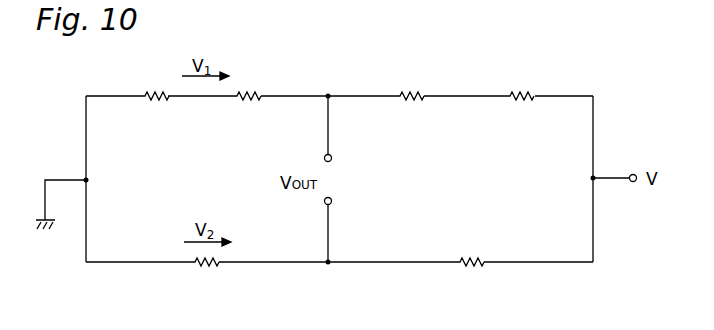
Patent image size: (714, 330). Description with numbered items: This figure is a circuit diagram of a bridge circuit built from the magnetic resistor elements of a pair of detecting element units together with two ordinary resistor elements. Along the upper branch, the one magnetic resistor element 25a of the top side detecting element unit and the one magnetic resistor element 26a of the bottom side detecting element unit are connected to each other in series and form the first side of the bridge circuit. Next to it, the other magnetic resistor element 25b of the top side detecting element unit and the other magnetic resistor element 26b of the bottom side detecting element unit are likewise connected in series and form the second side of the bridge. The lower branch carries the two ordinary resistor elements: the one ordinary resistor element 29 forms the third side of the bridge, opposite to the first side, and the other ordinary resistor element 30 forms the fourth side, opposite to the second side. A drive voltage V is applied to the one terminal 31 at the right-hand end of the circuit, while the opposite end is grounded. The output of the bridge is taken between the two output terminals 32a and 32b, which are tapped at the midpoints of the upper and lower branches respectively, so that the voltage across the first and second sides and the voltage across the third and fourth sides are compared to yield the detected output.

The magnetic resistor element 26a is at (160, 102).
The magnetic resistor element 25a is at (252, 102).
The magnetic resistor element 26b is at (413, 102).
The magnetic resistor element 25b is at (527, 102).
The ordinary resistor element 29 is at (210, 268).
The ordinary resistor element 30 is at (478, 268).
The output terminal 32a is at (332, 158).
The output terminal 32b is at (332, 203).
The terminal 31 is at (633, 182).